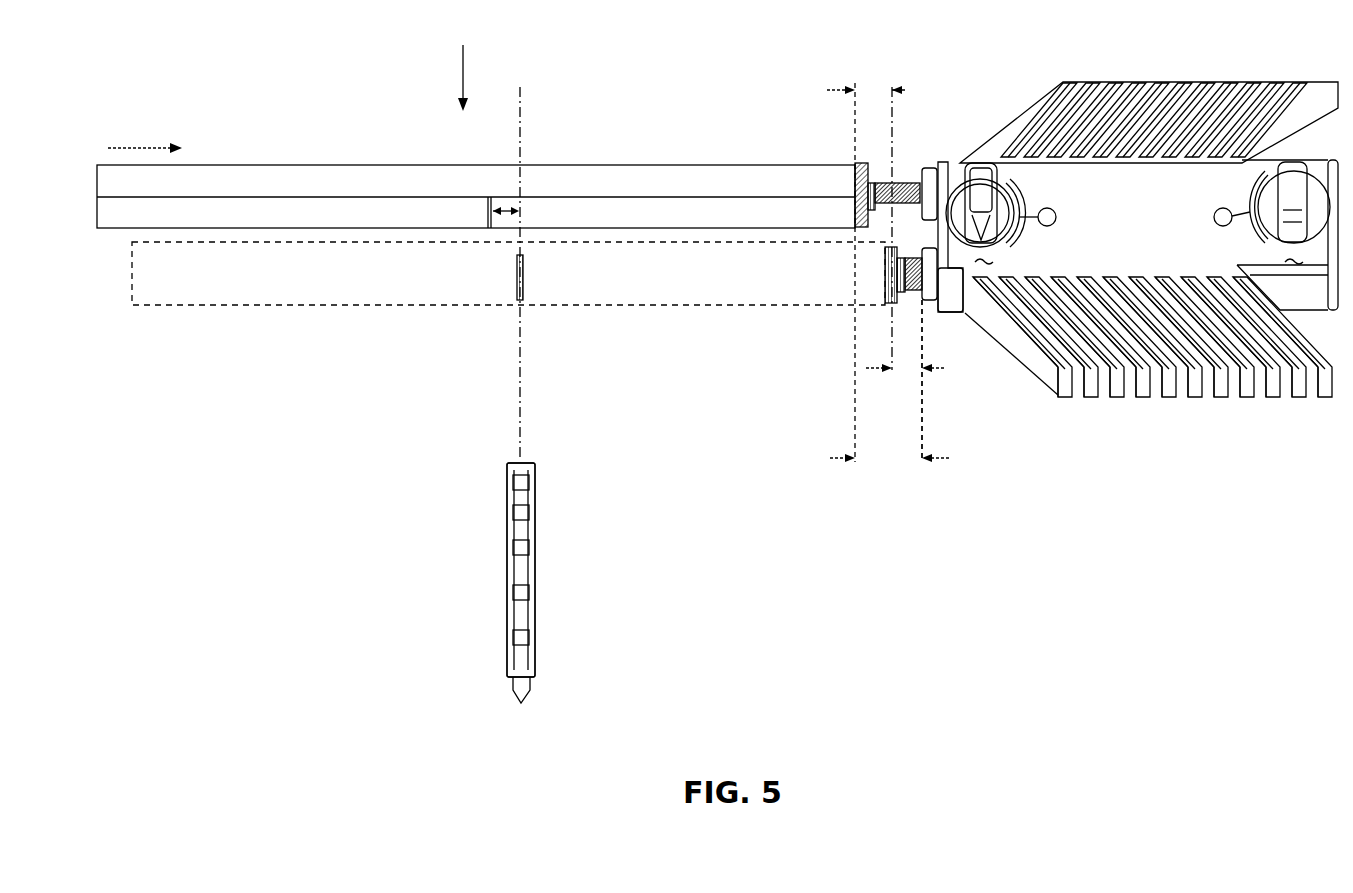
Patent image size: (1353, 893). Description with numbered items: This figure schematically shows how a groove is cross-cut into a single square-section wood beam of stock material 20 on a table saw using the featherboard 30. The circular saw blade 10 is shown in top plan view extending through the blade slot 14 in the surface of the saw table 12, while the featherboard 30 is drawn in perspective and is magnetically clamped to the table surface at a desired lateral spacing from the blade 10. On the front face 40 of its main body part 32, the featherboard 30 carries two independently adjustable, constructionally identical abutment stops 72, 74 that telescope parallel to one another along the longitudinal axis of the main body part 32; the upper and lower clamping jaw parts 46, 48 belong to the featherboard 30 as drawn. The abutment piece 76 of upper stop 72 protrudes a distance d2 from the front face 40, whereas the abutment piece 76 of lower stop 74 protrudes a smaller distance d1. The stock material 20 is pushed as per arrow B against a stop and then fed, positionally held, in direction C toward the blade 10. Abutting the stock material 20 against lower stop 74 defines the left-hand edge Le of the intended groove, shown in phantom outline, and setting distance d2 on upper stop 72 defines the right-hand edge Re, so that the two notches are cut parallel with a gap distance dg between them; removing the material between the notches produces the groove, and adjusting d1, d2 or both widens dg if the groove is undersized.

The circular saw blade 10 is at (509, 495).
The saw table 12 is at (344, 422).
The blade slot 14 is at (536, 545).
The stock material 20 is at (345, 162).
The featherboard 30 is at (1118, 44).
The main body part 32 is at (1070, 183).
The front face 40 is at (920, 438).
The upper clamping jaw 46 is at (1204, 78).
The lower clamping jaw 48 is at (1190, 393).
The upper abutment stop 72 is at (938, 133).
The lower abutment stop 74 is at (876, 277).
The abutment piece 76 is at (865, 161).
The pushing direction arrow B is at (152, 145).
The feed direction C is at (470, 82).
The left-hand edge Le is at (487, 197).
The gap distance dg is at (513, 206).
The right-hand edge Re is at (518, 292).
The distance d1 is at (945, 370).
The distance d2 is at (842, 462).